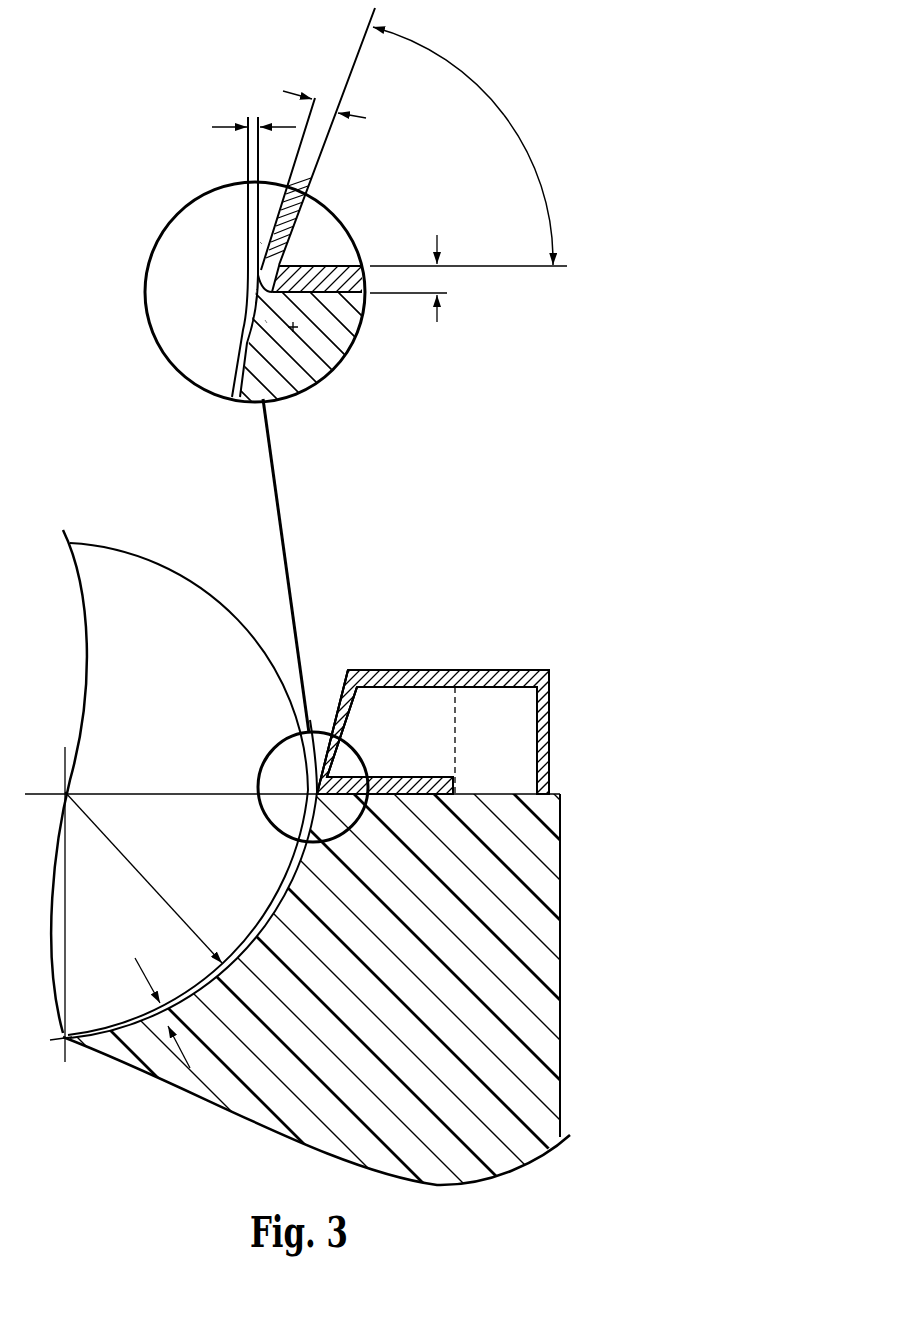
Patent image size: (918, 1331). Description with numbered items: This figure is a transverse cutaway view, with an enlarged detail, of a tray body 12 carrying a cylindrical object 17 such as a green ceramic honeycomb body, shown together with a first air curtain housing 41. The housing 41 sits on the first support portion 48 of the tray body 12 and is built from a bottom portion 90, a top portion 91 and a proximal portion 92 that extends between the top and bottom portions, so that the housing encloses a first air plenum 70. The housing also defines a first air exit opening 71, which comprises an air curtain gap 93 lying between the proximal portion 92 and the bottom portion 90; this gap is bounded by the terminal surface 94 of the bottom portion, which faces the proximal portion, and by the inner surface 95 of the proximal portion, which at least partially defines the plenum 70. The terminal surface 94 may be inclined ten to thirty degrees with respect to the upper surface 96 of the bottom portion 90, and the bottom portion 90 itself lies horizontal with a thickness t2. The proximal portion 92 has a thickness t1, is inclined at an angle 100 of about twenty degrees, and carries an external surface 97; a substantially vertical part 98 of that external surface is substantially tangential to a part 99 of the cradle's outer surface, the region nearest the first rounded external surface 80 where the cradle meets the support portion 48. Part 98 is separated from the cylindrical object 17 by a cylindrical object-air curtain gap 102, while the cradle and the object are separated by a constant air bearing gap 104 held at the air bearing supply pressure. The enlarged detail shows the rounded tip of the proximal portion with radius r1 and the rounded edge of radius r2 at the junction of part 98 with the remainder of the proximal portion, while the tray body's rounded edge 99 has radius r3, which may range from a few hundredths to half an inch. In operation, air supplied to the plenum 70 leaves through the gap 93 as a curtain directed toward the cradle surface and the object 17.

The tray body 12 is at (582, 957).
The cylindrical object 17 is at (130, 580).
The first air curtain housing 41 is at (441, 664).
The first support portion 48 is at (427, 800).
The first air plenum 70 is at (500, 705).
The first air exit opening 71 is at (339, 766).
The first rounded external surface 80 is at (325, 806).
The bottom portion 90 is at (425, 777).
The top portion 91 is at (410, 672).
The proximal portion 92 is at (352, 687).
The air curtain gap 93 is at (258, 272).
The terminal surface 94 is at (289, 282).
The inner surface 95 is at (294, 220).
The upper surface 96 is at (338, 262).
The external surface 97 is at (337, 683).
The part of external surface 98 is at (305, 775).
The part of outer surface of cradle 99 is at (267, 323).
The angle 100 is at (520, 128).
The cylindrical object-air curtain gap 102 is at (233, 127).
The air bearing gap 104 is at (149, 1000).
The rounded tip radius r1 is at (257, 290).
The rounded edge radius r2 is at (261, 243).
The rounded external surface radius r3 is at (275, 304).
The proximal portion thickness t1 is at (336, 111).
The bottom portion thickness t2 is at (468, 293).